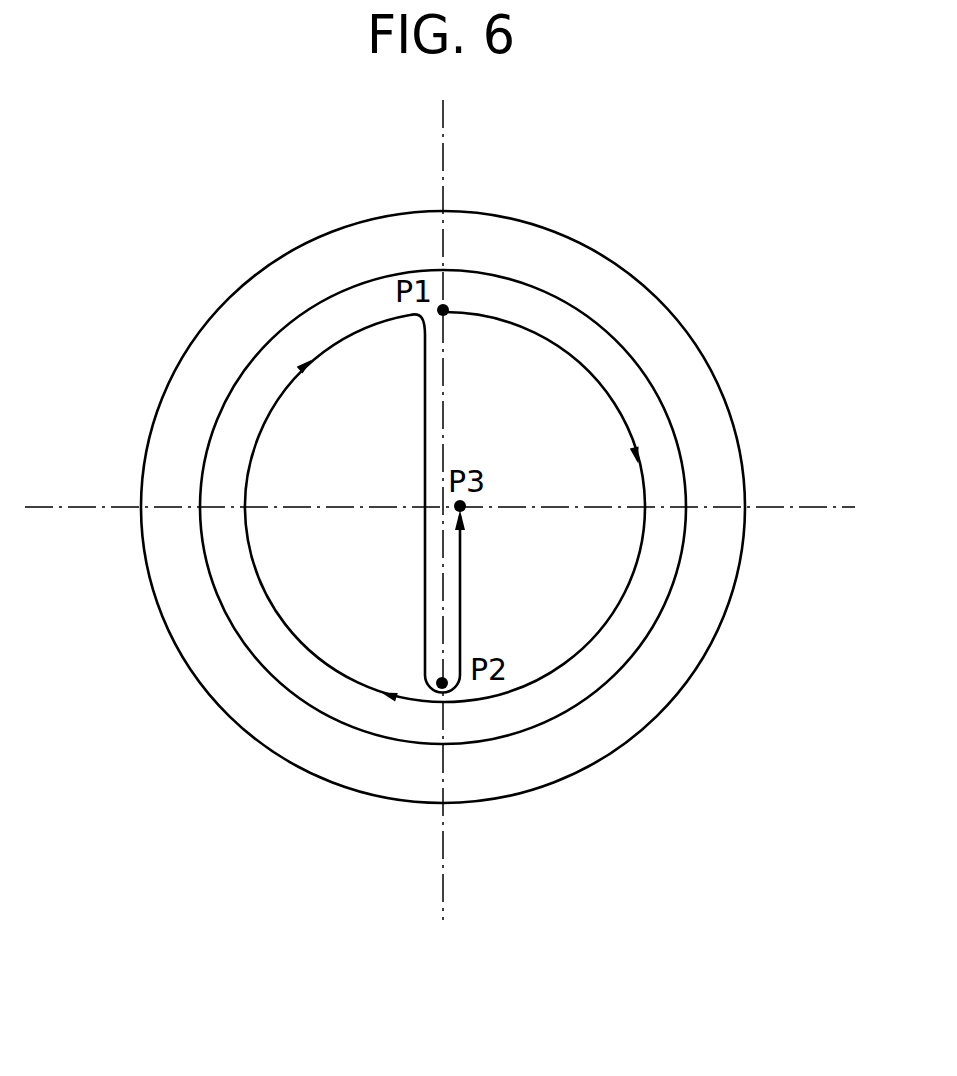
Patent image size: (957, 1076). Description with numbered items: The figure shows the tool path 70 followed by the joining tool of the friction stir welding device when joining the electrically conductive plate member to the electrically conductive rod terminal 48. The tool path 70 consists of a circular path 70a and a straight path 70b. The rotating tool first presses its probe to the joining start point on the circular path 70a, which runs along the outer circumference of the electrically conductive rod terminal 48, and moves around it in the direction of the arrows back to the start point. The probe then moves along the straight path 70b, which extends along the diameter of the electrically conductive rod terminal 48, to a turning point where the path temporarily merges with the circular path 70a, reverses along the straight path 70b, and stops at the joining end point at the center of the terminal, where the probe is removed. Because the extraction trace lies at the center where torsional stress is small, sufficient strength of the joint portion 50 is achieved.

The electrically conductive rod terminal 48 is at (708, 361).
The joint portion 50 is at (665, 488).
The tool path 70 is at (522, 528).
The circular path 70a is at (560, 667).
The straight path 70b is at (425, 575).